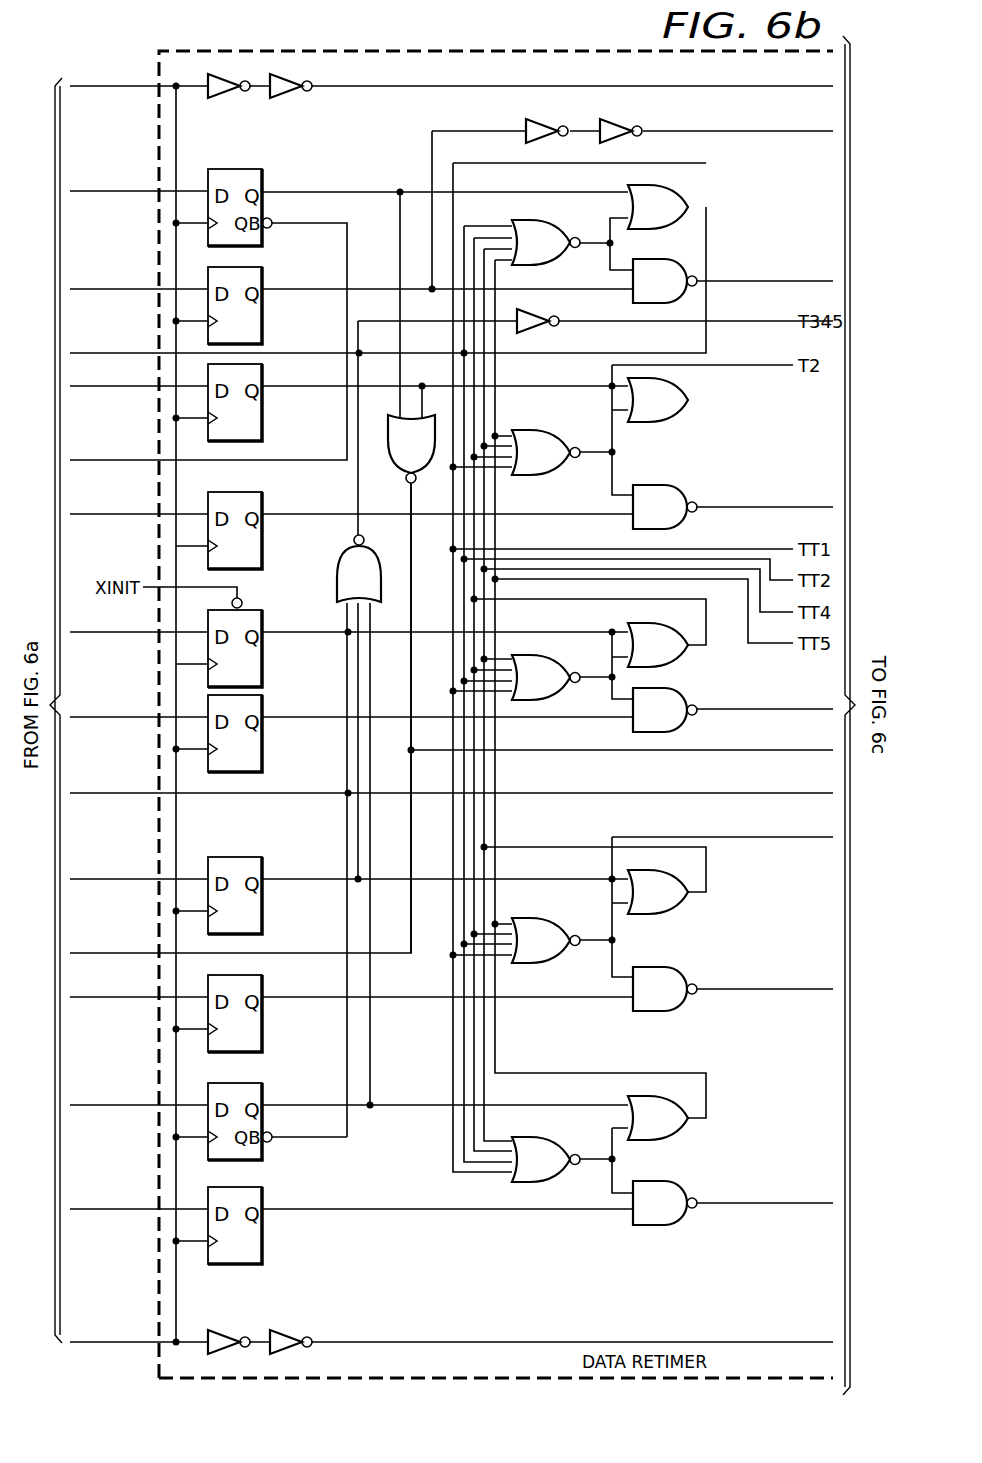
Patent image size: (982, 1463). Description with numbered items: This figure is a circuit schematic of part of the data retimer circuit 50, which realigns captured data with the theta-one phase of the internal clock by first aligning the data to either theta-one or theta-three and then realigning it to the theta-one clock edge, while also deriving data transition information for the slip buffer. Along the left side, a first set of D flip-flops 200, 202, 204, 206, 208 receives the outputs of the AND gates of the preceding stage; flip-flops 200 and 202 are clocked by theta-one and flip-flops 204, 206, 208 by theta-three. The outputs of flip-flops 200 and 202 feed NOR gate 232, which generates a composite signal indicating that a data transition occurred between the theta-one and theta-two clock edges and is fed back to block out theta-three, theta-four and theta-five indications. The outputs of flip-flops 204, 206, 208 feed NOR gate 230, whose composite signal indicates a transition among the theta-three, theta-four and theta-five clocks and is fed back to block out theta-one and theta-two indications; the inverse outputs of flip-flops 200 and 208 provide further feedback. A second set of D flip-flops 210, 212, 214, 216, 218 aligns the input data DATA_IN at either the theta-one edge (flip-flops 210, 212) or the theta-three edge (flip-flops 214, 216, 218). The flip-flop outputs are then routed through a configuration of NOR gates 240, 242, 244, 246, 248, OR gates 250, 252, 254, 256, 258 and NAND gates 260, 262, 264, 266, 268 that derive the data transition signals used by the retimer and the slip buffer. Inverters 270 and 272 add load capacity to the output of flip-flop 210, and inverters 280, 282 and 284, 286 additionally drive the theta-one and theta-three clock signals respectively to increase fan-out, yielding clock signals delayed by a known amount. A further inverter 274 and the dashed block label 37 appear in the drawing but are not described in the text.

The data retimer 37 is at (148, 62).
The data retimer circuit 50 is at (158, 1356).
The D flip-flop 200 is at (264, 205).
The D flip-flop 202 is at (263, 410).
The D flip-flop 204 is at (263, 656).
The D flip-flop 206 is at (263, 905).
The D flip-flop 208 is at (272, 1144).
The D flip-flop 210 is at (263, 276).
The D flip-flop 212 is at (263, 531).
The D flip-flop 214 is at (263, 742).
The D flip-flop 216 is at (263, 1023).
The D flip-flop 218 is at (263, 1236).
The NOR gate 230 is at (337, 574).
The NOR gate 232 is at (390, 450).
The NOR gate 240 is at (545, 266).
The NOR gate 242 is at (545, 476).
The NOR gate 244 is at (545, 700).
The NOR gate 246 is at (545, 963).
The NOR gate 248 is at (545, 1183).
The OR gate 250 is at (656, 229).
The OR gate 252 is at (656, 423).
The OR gate 254 is at (656, 668).
The OR gate 256 is at (656, 915).
The OR gate 258 is at (656, 1141).
The NAND gate 260 is at (664, 304).
The NAND gate 262 is at (659, 485).
The NAND gate 264 is at (662, 733).
The NAND gate 266 is at (654, 1012).
The NAND gate 268 is at (654, 1226).
The inverter 270 is at (518, 124).
The inverter 272 is at (640, 124).
The inverter 274 is at (548, 331).
The inverter 280 is at (228, 96).
The inverter 282 is at (292, 96).
The inverter 284 is at (232, 1330).
The inverter 286 is at (295, 1330).